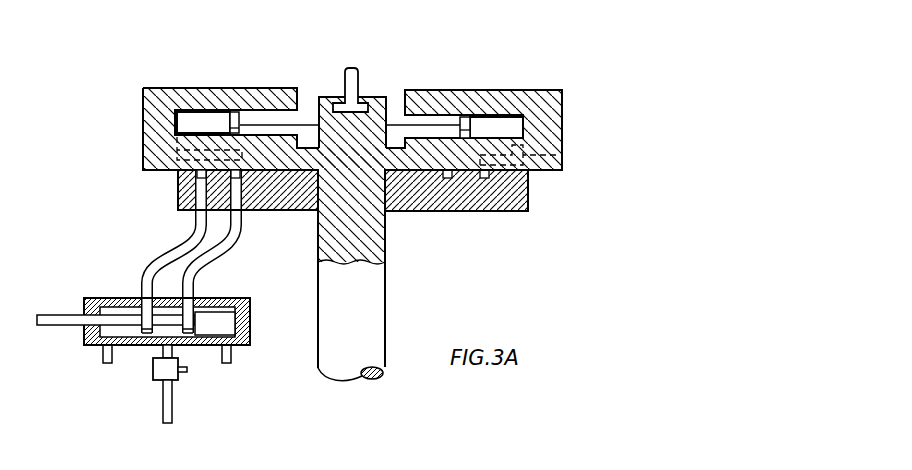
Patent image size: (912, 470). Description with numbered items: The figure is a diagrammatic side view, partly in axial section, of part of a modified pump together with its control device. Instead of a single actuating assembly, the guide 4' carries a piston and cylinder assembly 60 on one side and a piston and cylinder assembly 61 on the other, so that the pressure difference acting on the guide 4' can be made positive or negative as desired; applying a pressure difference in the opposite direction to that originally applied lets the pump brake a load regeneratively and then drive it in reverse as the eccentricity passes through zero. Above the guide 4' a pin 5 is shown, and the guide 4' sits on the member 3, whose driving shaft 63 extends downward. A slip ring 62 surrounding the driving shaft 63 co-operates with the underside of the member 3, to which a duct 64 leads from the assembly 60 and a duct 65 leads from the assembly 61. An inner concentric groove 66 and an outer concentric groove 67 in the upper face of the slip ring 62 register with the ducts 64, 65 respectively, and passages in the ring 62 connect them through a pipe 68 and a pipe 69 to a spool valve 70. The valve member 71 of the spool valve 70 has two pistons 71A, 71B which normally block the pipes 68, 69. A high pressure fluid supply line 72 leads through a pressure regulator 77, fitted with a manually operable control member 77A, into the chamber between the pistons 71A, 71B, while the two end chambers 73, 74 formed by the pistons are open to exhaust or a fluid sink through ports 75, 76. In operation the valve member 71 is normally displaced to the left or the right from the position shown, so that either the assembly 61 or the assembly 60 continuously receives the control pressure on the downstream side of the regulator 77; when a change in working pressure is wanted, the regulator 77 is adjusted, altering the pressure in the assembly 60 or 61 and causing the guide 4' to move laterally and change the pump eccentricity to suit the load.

The member 3 is at (548, 142).
The guide 4' is at (362, 90).
The pin 5 is at (344, 71).
The piston and cylinder assembly 60 is at (197, 118).
The piston and cylinder assembly 61 is at (500, 118).
The slip ring 62 is at (177, 190).
The driving shaft 63 is at (380, 296).
The duct 64 is at (173, 142).
The duct 65 is at (566, 158).
The inner concentric groove 66 is at (449, 179).
The outer concentric groove 67 is at (488, 179).
The pipe 68 is at (239, 238).
The pipe 69 is at (176, 248).
The spool valve 70 is at (172, 298).
The valve member 71 is at (50, 326).
The piston 71A is at (193, 347).
The piston 71B is at (135, 347).
The high pressure fluid supply line 72 is at (163, 408).
The end chamber 73 is at (232, 318).
The end chamber 74 is at (117, 306).
The port 75 is at (233, 358).
The port 76 is at (103, 352).
The pressure regulator 77 is at (157, 372).
The manually operable control member 77A is at (185, 373).